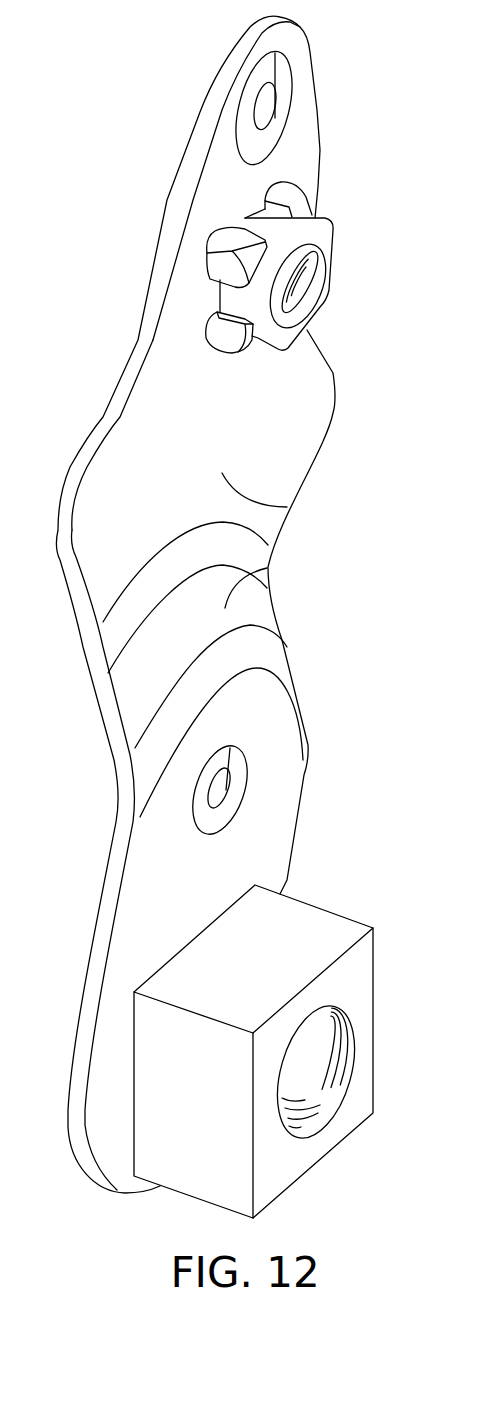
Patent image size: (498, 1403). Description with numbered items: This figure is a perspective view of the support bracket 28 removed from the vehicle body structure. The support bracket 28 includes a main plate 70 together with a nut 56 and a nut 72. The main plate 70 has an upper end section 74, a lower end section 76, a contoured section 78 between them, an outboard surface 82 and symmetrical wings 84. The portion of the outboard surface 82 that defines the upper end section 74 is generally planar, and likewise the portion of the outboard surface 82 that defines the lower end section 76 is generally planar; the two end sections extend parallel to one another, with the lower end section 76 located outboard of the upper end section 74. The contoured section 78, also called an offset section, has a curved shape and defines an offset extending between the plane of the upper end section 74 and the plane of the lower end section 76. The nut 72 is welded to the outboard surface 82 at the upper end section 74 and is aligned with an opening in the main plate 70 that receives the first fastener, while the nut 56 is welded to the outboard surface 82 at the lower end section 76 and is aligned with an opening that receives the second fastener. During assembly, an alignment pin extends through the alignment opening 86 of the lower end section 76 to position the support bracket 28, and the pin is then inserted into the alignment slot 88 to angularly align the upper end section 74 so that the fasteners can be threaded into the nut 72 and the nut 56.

The support bracket 28 is at (403, 103).
The nut 56 is at (303, 932).
The main plate 70 is at (272, 387).
The nut 72 is at (338, 257).
The upper end section 74 is at (290, 163).
The lower end section 76 is at (267, 820).
The contoured section 78 is at (263, 570).
The outboard surface 82 is at (287, 507).
The symmetrical wings 84 is at (70, 468).
The alignment opening 86 is at (233, 767).
The alignment slot 88 is at (258, 92).